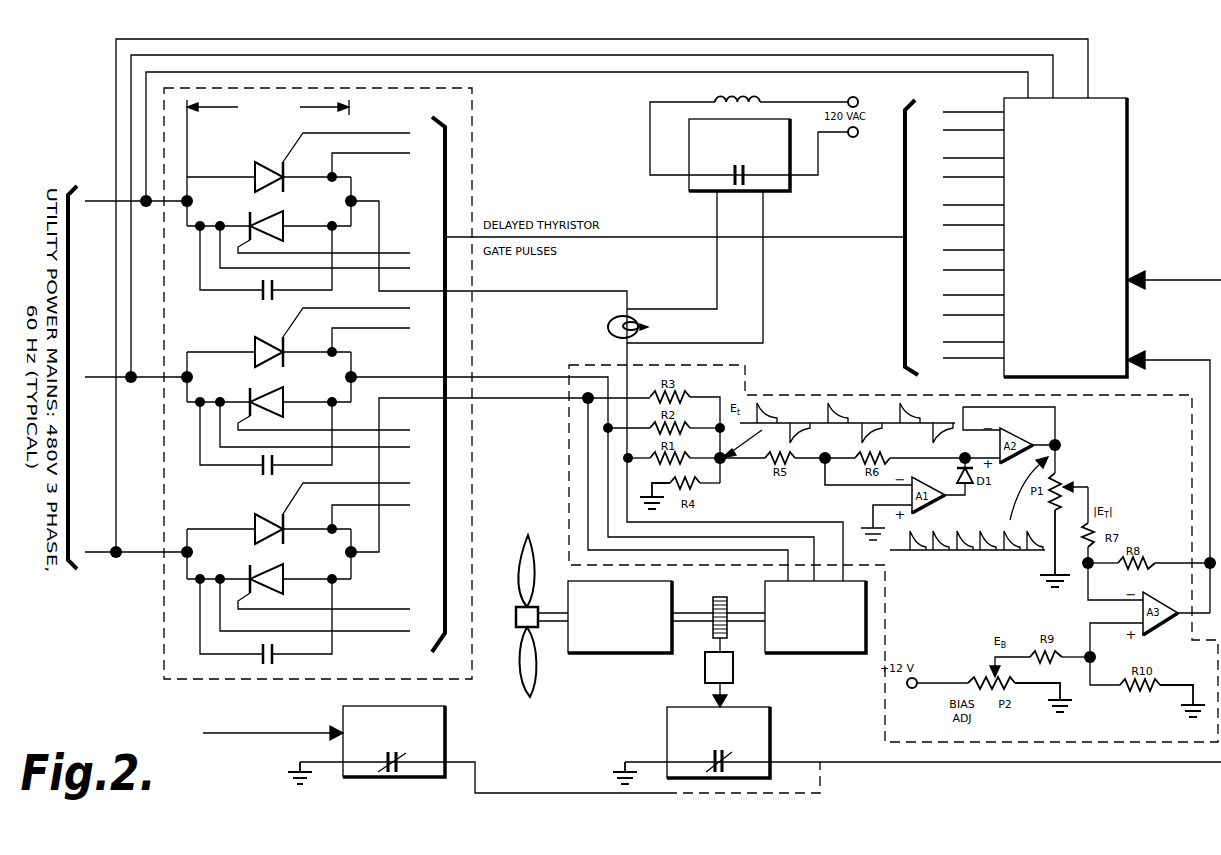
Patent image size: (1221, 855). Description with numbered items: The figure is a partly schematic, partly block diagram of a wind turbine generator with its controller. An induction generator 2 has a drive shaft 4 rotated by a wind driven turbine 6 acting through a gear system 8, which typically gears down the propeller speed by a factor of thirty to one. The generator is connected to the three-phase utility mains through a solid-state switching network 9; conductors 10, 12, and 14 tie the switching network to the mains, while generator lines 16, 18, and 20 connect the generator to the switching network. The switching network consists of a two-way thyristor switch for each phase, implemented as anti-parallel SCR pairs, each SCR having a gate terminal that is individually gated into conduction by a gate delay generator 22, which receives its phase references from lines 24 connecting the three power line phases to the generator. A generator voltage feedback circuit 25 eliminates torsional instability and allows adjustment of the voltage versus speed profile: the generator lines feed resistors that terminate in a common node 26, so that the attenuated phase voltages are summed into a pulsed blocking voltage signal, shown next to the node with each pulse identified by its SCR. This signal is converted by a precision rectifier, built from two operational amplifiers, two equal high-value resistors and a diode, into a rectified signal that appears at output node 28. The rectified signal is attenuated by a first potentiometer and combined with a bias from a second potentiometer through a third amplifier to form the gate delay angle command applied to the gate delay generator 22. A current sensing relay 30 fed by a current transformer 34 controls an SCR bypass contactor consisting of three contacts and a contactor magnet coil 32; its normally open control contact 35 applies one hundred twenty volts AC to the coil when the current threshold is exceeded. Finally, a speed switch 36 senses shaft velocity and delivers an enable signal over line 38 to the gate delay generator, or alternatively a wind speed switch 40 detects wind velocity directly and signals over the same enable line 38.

The induction generator 2 is at (845, 655).
The drive shaft 4 is at (748, 625).
The wind driven turbine 6 is at (522, 540).
The gear system 8 is at (592, 655).
The solid-state switching network 9 is at (472, 100).
The conductor 10 is at (148, 206).
The conductor 12 is at (167, 380).
The conductor 14 is at (165, 556).
The generator line 16 is at (597, 291).
The generator line 18 is at (515, 375).
The generator line 20 is at (515, 398).
The gate delay generator 22 is at (1127, 193).
The lines 24 is at (1030, 78).
The generator voltage feedback circuit 25 is at (823, 394).
The common node 26 is at (724, 462).
The output node 28 is at (1062, 443).
The current sensing relay 30 is at (790, 185).
The contactor magnet coil 32 is at (720, 92).
The current transformer 34 is at (608, 322).
The normally open control contact 35 is at (688, 185).
The speed switch 36 is at (678, 707).
The enable line 38 is at (855, 760).
The wind speed switch 40 is at (447, 730).